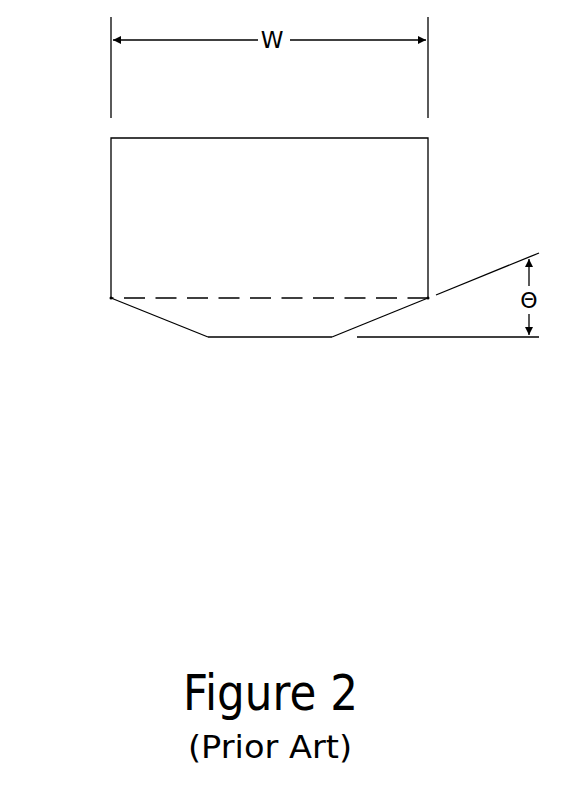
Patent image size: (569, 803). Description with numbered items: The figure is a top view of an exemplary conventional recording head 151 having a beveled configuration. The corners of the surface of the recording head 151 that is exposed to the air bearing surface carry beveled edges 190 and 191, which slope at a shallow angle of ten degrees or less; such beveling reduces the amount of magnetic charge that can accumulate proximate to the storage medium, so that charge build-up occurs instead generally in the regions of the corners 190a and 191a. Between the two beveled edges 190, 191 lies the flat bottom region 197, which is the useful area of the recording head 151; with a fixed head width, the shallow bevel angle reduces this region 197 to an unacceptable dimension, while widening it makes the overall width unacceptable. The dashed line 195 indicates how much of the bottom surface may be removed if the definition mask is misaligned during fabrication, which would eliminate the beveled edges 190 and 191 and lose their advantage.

The recording head 151 is at (310, 158).
The line 195 is at (230, 296).
The beveled edge 190 is at (153, 317).
The corner 190a is at (109, 299).
The region 197 is at (330, 347).
The beveled edge 191 is at (385, 319).
The corner 191a is at (431, 300).